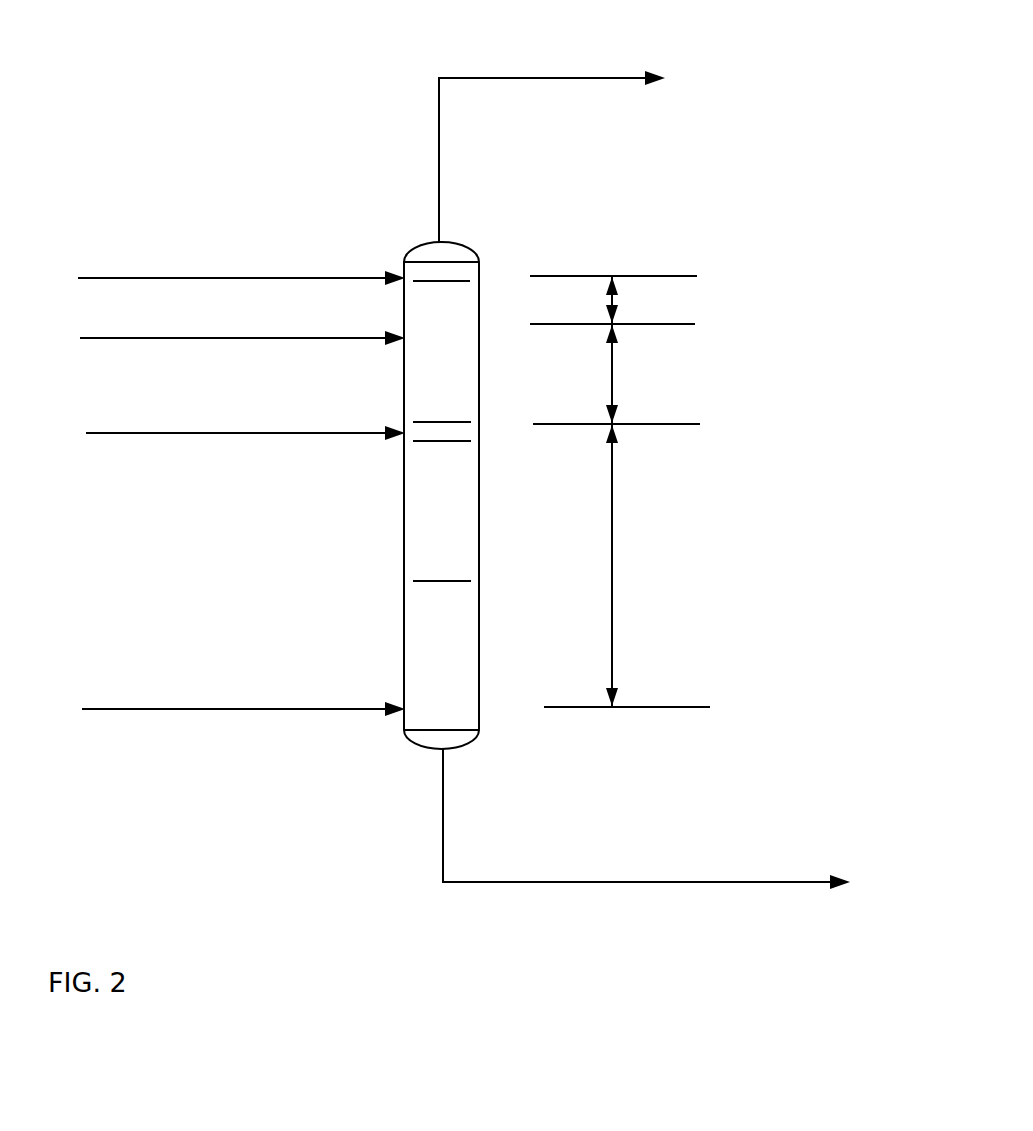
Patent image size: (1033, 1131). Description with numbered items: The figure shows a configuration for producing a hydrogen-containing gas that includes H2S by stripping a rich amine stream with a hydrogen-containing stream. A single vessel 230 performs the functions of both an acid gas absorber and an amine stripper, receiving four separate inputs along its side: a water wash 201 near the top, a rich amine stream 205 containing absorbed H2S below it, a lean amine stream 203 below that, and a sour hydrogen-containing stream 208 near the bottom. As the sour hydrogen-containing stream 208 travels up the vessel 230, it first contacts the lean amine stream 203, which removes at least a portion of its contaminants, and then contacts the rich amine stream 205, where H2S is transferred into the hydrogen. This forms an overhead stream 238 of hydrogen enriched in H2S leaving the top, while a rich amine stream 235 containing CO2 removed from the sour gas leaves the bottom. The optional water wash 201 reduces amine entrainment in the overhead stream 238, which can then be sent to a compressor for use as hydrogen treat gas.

The water wash 201 is at (245, 260).
The lean amine stream 203 is at (259, 456).
The rich amine stream 205 is at (163, 347).
The sour hydrogen-containing stream 208 is at (142, 687).
The vessel 230 is at (492, 257).
The rich amine stream 235 is at (475, 840).
The overhead stream 238 is at (677, 80).